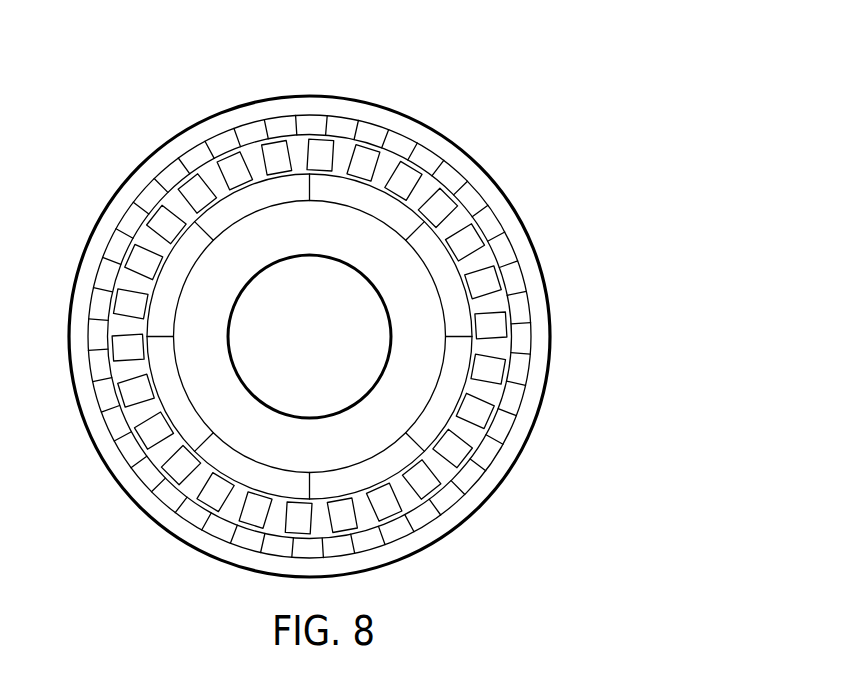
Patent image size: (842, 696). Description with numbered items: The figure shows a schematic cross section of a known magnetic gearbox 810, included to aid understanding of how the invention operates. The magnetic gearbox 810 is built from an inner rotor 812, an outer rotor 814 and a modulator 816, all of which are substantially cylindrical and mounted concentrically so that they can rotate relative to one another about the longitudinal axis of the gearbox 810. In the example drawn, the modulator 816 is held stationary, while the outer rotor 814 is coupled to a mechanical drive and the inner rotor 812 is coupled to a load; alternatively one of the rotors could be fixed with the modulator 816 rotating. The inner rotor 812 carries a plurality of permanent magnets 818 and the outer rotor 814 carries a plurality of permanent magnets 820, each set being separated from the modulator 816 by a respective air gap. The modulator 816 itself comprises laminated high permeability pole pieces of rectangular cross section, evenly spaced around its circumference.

The magnetic gearbox 810 is at (510, 81).
The inner rotor 812 is at (455, 265).
The outer rotor 814 is at (483, 192).
The modulator 816 is at (363, 158).
The permanent magnets 818 is at (458, 325).
The permanent magnets 820 is at (473, 472).